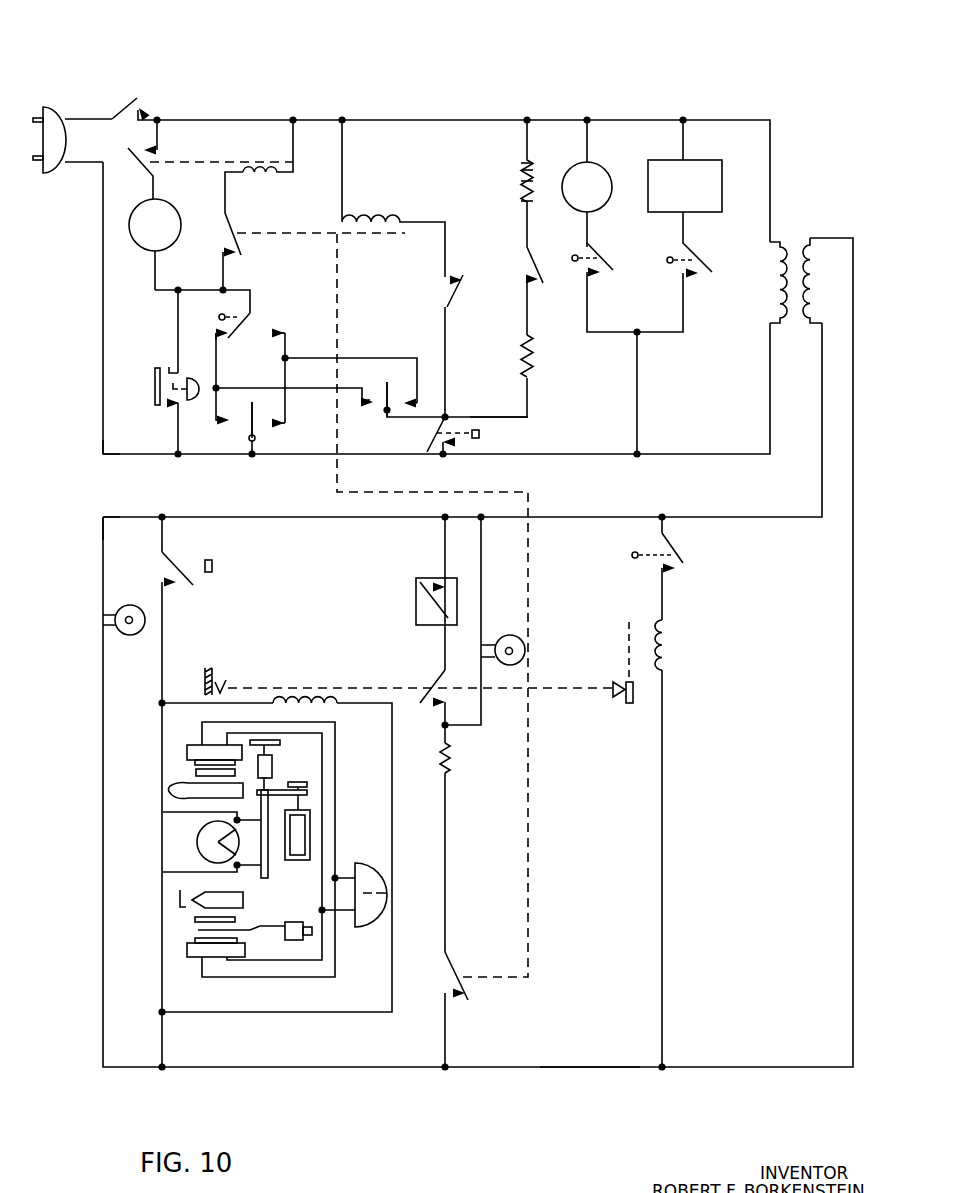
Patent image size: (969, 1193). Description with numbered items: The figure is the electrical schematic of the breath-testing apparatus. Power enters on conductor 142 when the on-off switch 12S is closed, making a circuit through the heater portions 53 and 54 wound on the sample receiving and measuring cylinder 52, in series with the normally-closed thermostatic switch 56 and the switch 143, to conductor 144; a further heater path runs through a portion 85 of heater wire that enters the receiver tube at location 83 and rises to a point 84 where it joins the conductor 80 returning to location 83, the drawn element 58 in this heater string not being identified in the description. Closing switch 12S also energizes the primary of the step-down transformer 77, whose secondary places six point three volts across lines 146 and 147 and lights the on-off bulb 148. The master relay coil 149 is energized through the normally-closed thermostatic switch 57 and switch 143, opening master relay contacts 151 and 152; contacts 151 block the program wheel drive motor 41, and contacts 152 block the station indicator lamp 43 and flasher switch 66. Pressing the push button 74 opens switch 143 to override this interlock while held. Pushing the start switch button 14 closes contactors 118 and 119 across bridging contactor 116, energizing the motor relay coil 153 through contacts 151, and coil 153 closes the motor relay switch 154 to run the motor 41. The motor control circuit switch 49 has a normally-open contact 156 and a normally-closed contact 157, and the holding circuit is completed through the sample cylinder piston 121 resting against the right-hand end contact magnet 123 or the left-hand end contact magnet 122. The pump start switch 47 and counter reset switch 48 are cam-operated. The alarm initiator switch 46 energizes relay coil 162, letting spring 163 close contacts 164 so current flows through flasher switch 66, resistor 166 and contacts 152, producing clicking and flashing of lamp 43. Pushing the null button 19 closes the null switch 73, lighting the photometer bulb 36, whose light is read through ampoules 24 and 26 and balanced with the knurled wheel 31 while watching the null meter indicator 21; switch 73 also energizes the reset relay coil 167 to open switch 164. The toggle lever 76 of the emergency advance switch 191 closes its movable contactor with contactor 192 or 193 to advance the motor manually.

The conductor 142 is at (88, 119).
The on-off switch 12S is at (144, 106).
The motor relay switch 154 is at (146, 170).
The program wheel drive motor 41 is at (151, 250).
The motor relay coil 153 is at (251, 182).
The master relay contacts 151 is at (229, 245).
The master relay coil 149 is at (379, 218).
The thermostatically operated switch 57 is at (460, 300).
The conductor 80 is at (530, 152).
The resistor 58 is at (527, 192).
The point near inlet end of tube 84 is at (527, 162).
The portion of heater wire 85 is at (527, 171).
The location on receiver tube 83 is at (527, 181).
The heating coil 53 is at (527, 203).
The thermostatically controlled switch 56 is at (528, 262).
The heating coil 54 is at (522, 357).
The pump start switch 47 is at (601, 257).
The counter reset switch 48 is at (700, 261).
The transformer 77 is at (779, 300).
The sample receiving and measuring cylinder 52 is at (497, 417).
The switch 143 is at (434, 436).
The thermal relay disabling switch button 74 is at (479, 436).
The normally-closed contact 157 is at (228, 342).
The motor control circuit switch 49 is at (265, 306).
The normally-open contact 156 is at (276, 330).
The contactor 119 is at (168, 370).
The bridging contactor 116 is at (155, 389).
The contactor 118 is at (172, 406).
The start switch push button 14 is at (192, 401).
The contactor 192 is at (226, 426).
The contactor 193 is at (273, 428).
The emergency advance switch 191 is at (255, 410).
The manual advance switch toggle lever 76 is at (250, 442).
The sample cylinder piston 121 is at (385, 392).
The left-hand end contact magnet 122 is at (370, 404).
The right-hand end contact magnet 123 is at (408, 400).
The conductor 144 is at (108, 454).
The secondary line 146 is at (103, 517).
The on-off bulb 148 is at (121, 631).
The null switch 73 is at (179, 586).
The null switch push button 19 is at (212, 565).
The spring 163 is at (230, 682).
The reset relay coil 167 is at (337, 707).
The flasher switch 66 is at (416, 591).
The flasher control relay contacts 164 is at (432, 688).
The station indicator lamp 43 is at (525, 645).
The resistor 166 is at (452, 762).
The alarm initiator switch 46 is at (684, 561).
The relay coil 162 is at (668, 647).
The master relay contacts 152 is at (453, 973).
The secondary line 147 is at (597, 1067).
The ampoule 26 is at (170, 788).
The photometer lamp 36 is at (199, 832).
The knurled balance wheel 31 is at (276, 743).
The ampoule 24 is at (245, 898).
The null meter indicator 21 is at (371, 928).